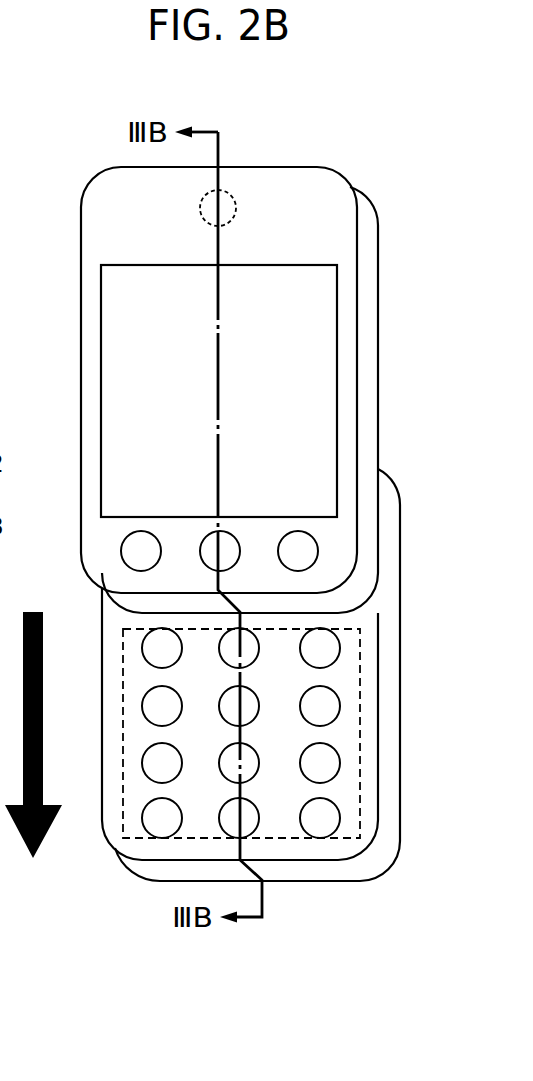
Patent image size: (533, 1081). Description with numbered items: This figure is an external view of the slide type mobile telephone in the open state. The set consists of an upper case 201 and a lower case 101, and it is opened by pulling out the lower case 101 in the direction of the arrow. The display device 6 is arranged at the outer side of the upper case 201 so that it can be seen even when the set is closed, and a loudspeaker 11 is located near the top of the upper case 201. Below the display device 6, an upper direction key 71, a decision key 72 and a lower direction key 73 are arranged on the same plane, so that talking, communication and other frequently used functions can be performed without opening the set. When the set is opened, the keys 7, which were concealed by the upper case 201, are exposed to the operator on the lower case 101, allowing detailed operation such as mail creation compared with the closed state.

The upper case 201 is at (310, 178).
The lower case 101 is at (400, 600).
The display device 6 is at (317, 291).
The loudspeaker 11 is at (231, 194).
The upper direction key 71 is at (121, 552).
The decision key 72 is at (233, 538).
The lower direction key 73 is at (319, 551).
The key 7 is at (340, 670).